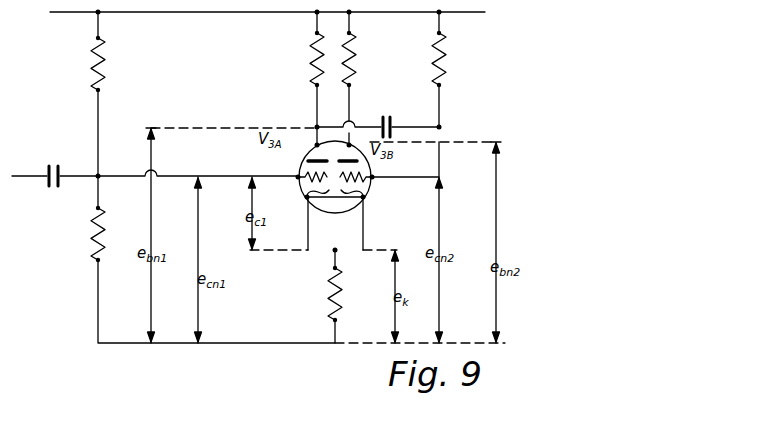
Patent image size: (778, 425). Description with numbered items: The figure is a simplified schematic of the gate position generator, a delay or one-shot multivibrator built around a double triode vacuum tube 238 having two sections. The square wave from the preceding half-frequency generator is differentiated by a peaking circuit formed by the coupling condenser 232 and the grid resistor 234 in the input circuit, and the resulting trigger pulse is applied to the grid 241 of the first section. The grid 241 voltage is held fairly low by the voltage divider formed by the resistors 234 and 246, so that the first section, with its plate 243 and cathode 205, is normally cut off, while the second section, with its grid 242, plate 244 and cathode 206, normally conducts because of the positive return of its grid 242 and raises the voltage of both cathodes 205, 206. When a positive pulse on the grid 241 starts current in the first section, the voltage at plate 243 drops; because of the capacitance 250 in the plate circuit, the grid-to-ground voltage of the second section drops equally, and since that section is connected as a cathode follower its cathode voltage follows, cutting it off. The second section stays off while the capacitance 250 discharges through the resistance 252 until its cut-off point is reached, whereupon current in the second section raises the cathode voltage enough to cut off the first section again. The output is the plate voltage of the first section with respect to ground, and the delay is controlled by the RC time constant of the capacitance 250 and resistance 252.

The voltage divider resistor 246 is at (106, 72).
The coupling condenser 232 is at (57, 162).
The grid resistor 234 is at (97, 262).
The capacitance 250 is at (406, 90).
The resistance 252 is at (444, 64).
The plate 243 is at (310, 154).
The plate 244 is at (358, 158).
The grid 241 is at (306, 181).
The grid 242 is at (364, 181).
The cathode 205 is at (307, 198).
The cathode 206 is at (364, 198).
The double triode vacuum tube 238 is at (354, 213).